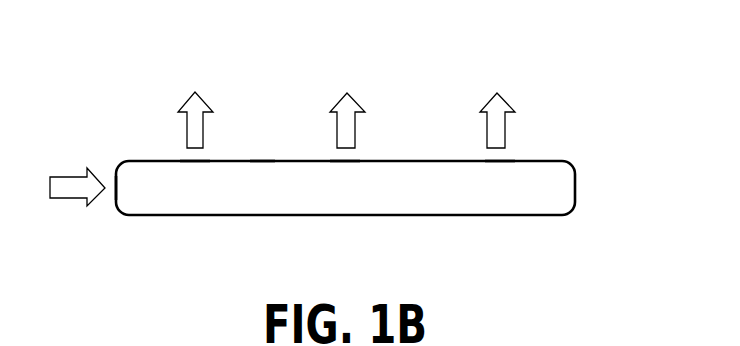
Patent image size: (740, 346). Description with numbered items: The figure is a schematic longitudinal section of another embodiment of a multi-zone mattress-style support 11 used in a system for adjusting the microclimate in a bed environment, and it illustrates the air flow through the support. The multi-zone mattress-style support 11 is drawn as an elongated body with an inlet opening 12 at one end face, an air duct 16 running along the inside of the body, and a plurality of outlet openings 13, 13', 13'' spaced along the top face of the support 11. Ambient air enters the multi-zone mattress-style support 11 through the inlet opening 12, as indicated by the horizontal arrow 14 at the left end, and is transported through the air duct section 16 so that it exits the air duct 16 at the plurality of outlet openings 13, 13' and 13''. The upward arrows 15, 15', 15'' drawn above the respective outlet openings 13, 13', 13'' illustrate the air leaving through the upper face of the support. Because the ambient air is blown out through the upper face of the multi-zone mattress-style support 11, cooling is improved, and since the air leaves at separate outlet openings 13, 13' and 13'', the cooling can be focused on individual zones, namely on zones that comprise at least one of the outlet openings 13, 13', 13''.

The multi-zone mattress-style support 11 is at (415, 161).
The inlet opening 12 is at (112, 184).
The outlet opening 13 is at (174, 127).
The outlet opening 13' is at (322, 127).
The outlet opening 13'' is at (475, 127).
The arrow 14 is at (68, 172).
The first output light 15 is at (187, 90).
The second output light 15' is at (337, 90).
The third output light 15'' is at (486, 90).
The air duct 16 is at (262, 171).